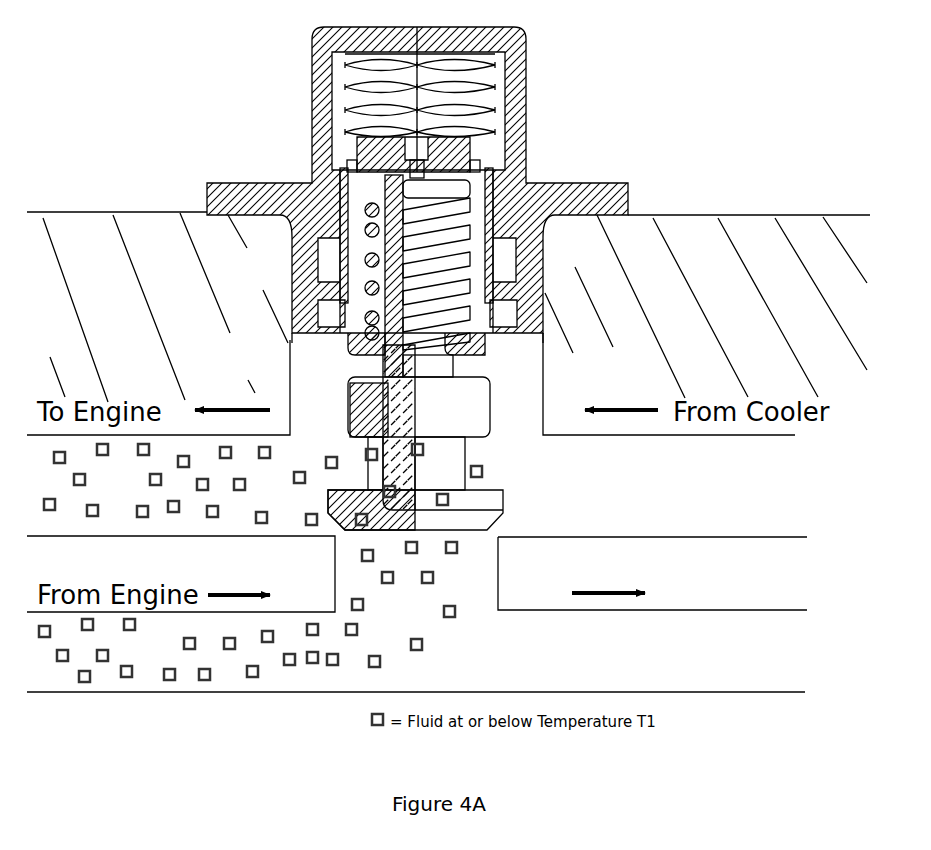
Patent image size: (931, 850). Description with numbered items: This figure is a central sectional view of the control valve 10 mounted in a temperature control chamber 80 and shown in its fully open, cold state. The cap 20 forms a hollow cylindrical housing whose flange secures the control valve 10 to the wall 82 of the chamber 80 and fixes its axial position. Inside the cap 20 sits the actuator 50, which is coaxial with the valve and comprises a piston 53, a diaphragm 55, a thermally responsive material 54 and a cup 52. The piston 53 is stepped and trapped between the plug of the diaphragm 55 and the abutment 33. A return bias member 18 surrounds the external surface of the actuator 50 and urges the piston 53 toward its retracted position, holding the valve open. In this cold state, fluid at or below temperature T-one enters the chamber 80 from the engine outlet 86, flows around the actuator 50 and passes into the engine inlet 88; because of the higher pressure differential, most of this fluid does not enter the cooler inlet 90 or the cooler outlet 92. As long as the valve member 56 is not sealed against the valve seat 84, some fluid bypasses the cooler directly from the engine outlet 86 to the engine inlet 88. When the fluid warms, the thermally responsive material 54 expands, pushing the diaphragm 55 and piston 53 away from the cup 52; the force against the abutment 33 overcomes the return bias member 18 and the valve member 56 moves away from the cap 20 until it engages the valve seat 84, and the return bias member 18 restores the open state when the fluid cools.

The control valve 10 is at (417, 203).
The cap 20 is at (527, 103).
The abutment 33 is at (458, 184).
The return bias member 18 is at (543, 238).
The piston 53 is at (292, 270).
The diaphragm 55 is at (345, 357).
The wall 82 is at (745, 316).
The actuator 50 is at (460, 408).
The cup 52 is at (348, 434).
The thermally responsive material 54 is at (418, 418).
The valve member 56 is at (497, 522).
The valve seat 84 is at (505, 537).
The engine inlet 88 is at (130, 494).
The cooler outlet 92 is at (705, 504).
The chamber 80 is at (425, 619).
The engine outlet 86 is at (170, 661).
The cooler inlet 90 is at (690, 661).